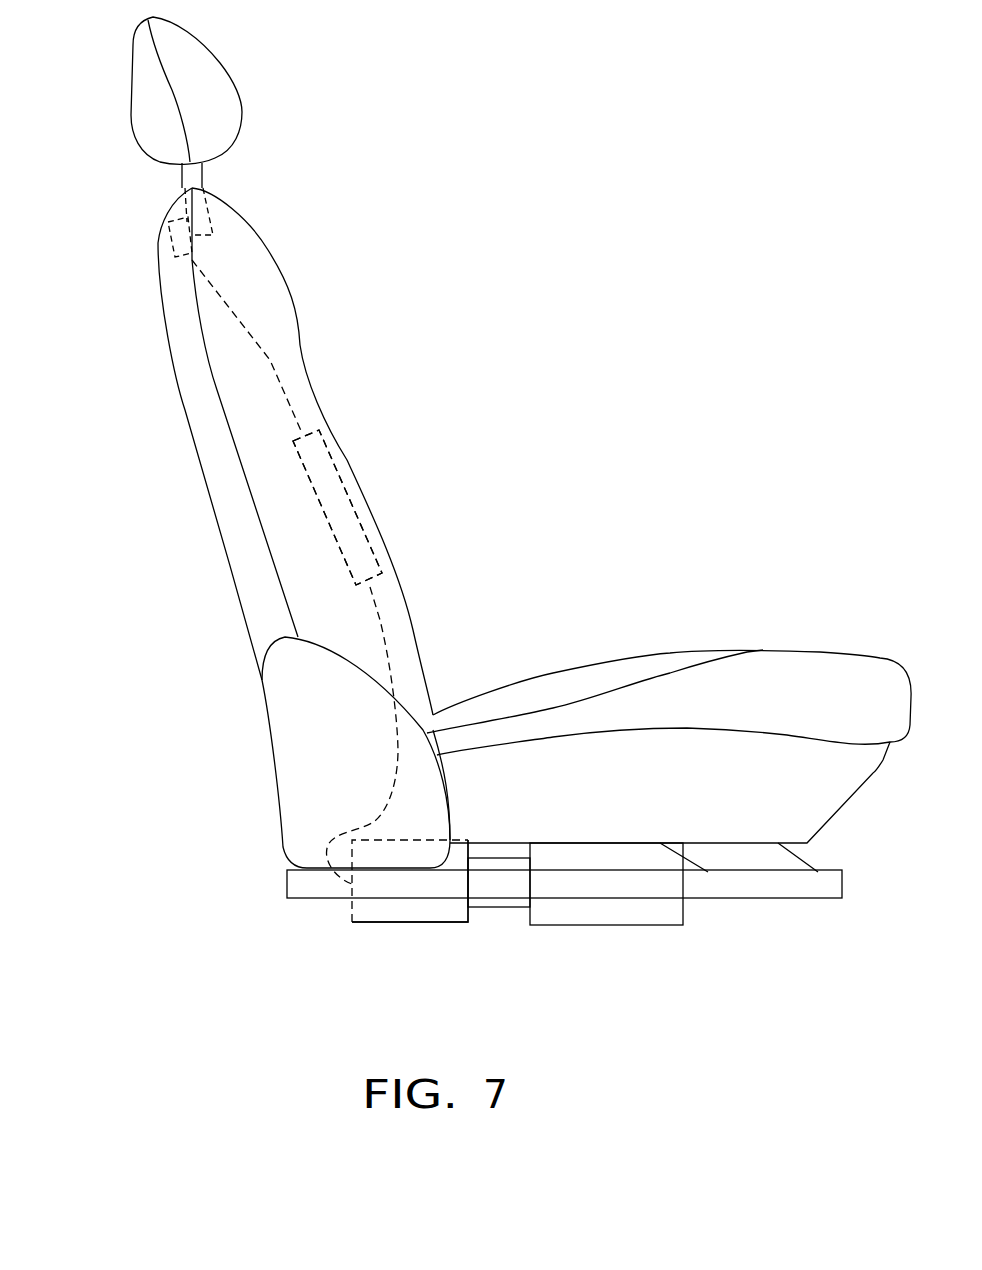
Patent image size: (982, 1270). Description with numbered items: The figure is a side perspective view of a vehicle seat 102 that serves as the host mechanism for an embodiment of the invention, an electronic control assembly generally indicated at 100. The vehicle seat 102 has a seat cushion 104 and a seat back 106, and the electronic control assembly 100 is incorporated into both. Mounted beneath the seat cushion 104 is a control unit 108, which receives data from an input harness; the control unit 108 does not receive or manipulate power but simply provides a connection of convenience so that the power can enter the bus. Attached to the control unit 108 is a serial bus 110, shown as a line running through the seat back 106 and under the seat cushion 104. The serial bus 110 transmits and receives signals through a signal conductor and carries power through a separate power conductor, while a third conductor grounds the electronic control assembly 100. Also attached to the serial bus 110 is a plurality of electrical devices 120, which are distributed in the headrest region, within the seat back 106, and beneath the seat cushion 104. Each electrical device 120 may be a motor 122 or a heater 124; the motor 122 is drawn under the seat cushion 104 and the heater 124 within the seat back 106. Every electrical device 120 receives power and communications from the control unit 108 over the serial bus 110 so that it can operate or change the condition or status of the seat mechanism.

The electronic control assembly 100 is at (218, 640).
The vehicle seat 102 is at (350, 458).
The seat cushion 104 is at (727, 648).
The seat back 106 is at (193, 430).
The control unit 108 is at (663, 925).
The serial bus 110 is at (270, 360).
The electrical device 120 is at (168, 241).
The motor 122 is at (430, 922).
The heater 124 is at (334, 525).